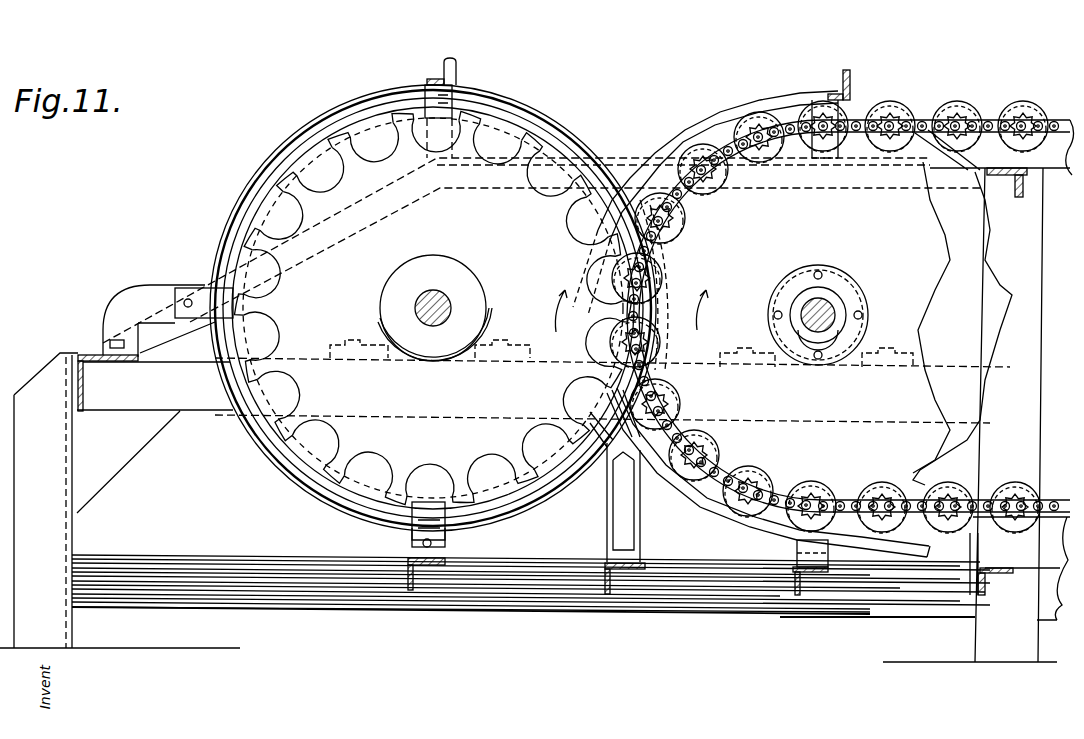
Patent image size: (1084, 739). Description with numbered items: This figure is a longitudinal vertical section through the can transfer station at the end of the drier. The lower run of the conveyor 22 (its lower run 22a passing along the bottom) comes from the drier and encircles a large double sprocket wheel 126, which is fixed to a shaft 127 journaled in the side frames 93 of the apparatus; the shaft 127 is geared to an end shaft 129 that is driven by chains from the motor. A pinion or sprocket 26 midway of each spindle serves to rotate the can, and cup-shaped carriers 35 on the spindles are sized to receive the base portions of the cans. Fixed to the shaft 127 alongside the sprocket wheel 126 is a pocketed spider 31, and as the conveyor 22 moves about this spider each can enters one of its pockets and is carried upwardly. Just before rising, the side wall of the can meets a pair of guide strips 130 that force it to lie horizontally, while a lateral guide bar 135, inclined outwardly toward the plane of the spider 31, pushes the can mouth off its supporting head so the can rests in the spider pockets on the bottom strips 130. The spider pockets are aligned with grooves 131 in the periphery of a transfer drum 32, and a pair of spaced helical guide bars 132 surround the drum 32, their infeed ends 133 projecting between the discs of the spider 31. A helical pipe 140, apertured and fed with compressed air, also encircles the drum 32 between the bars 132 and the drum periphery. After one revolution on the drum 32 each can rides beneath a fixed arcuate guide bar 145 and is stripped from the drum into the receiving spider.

The conveyor chain 22 is at (840, 297).
The chain lower run 22a is at (847, 500).
The pinion or sprocket 26 is at (962, 103).
The pocketed spider 31 is at (917, 327).
The transfer drum 32 is at (343, 163).
The cup-shaped supporting elements or carriers 35 is at (898, 100).
The frame 93 is at (1052, 143).
The double sprocket wheel 126 is at (972, 323).
The shaft 127 is at (820, 300).
The shaft 129 is at (418, 305).
The guide strips 130 is at (857, 542).
The grooves or pockets 131 is at (477, 150).
The helical guide bars 132 is at (571, 131).
The infeed ends 133 is at (668, 304).
The lateral guide bar 135 is at (710, 493).
The pipe 140 is at (478, 113).
The arcuate guide bar 145 is at (706, 113).